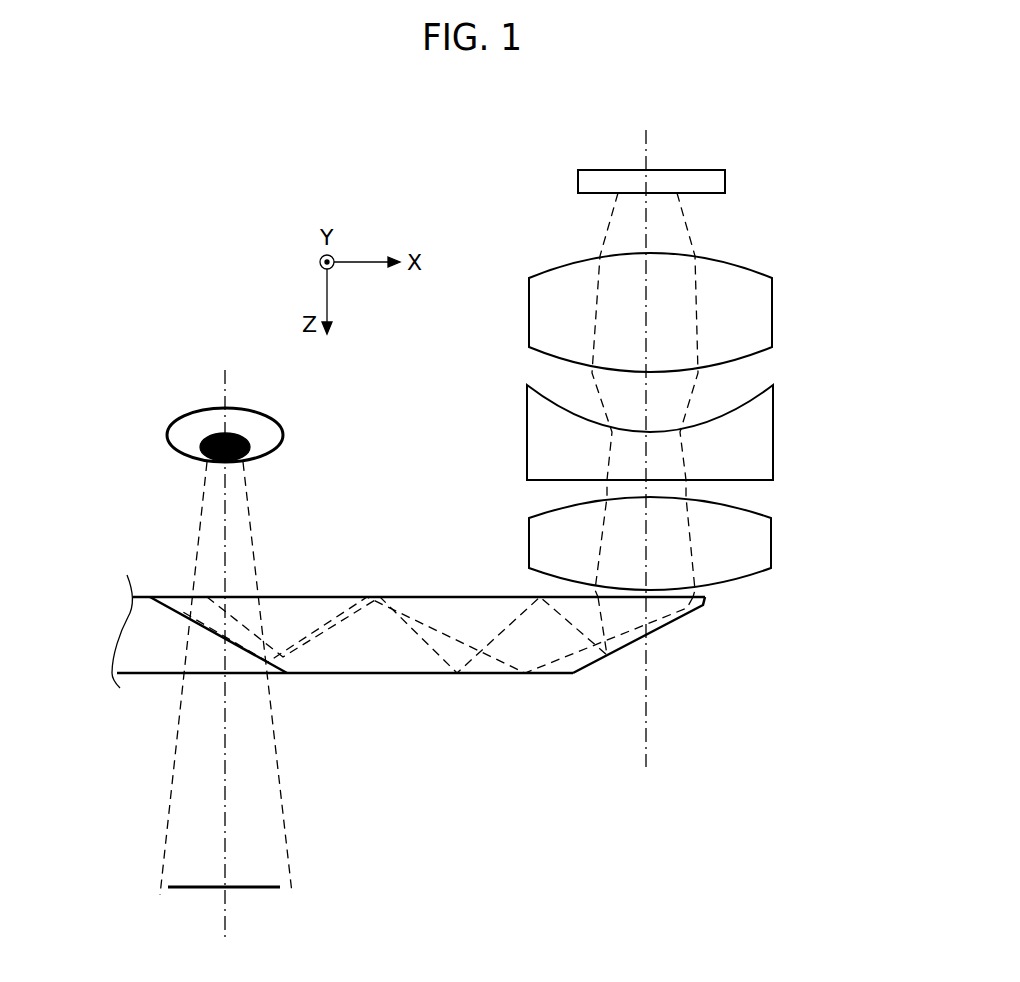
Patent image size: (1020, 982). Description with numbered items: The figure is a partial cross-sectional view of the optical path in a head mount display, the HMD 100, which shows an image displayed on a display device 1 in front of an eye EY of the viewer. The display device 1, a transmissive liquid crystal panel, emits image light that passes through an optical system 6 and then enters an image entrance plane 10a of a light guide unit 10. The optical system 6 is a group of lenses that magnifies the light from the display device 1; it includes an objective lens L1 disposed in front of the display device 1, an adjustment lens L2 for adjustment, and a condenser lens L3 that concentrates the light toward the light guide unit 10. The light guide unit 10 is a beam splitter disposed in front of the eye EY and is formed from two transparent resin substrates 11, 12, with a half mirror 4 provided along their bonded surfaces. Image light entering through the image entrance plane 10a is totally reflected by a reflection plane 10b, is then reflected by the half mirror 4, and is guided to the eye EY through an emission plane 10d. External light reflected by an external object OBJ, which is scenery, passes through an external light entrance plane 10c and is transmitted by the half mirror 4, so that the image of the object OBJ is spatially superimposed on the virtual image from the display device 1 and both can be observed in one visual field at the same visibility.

The display device 1 is at (725, 181).
The optical system 6 is at (823, 289).
The objective lens L1 is at (772, 312).
The adjustment lens L2 is at (773, 432).
The condenser lens L3 is at (771, 542).
The half mirror 4 is at (153, 609).
The light guide unit 10 is at (451, 685).
The image entrance plane 10a is at (632, 606).
The reflection plane 10b is at (658, 632).
The external light entrance plane 10c is at (247, 673).
The emission plane 10d is at (243, 596).
The resin substrate 11 is at (570, 677).
The resin substrate 12 is at (157, 655).
The HMD 100 is at (708, 750).
The eye EY is at (283, 437).
The external object OBJ is at (253, 889).